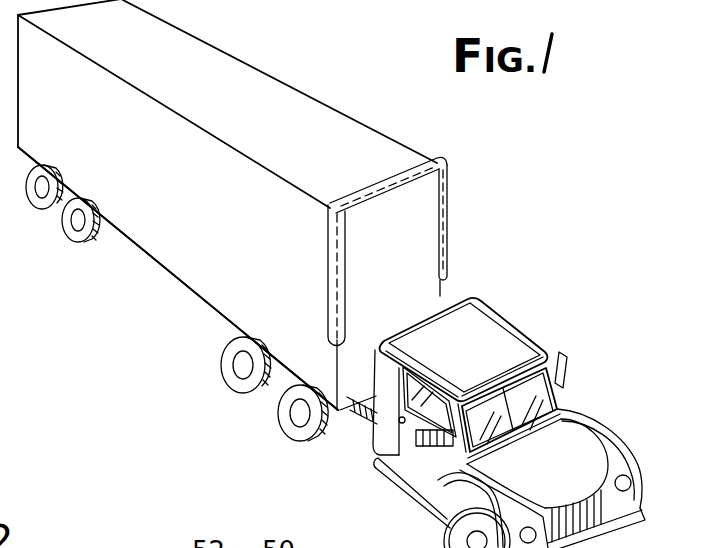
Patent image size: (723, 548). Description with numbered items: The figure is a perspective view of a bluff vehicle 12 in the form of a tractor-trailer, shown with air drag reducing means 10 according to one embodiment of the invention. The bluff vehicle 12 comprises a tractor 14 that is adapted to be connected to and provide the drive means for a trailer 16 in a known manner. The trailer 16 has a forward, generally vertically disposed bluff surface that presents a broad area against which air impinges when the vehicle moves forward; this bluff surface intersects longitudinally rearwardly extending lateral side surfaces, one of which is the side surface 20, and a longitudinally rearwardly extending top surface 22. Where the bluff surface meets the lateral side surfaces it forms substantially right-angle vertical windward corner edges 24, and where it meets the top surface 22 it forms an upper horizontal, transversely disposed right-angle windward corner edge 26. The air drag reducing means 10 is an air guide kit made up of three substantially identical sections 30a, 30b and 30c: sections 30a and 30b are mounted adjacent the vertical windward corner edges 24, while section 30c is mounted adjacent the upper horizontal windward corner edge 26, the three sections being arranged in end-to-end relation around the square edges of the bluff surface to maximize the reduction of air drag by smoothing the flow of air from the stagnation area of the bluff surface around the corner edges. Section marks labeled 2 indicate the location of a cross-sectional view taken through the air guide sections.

The section line 2- 2 is at (347, 185).
The air drag reducing means 10 is at (462, 253).
The bluff vehicle 12 is at (75, 278).
The tractor 14 is at (438, 465).
The trailer 16 is at (152, 258).
The lateral side surface 20 is at (180, 258).
The top surface 22 is at (298, 103).
The vertical windward corner edge 24 is at (440, 295).
The upper horizontal windward corner edge 26 is at (452, 193).
The air guide kit section 30a is at (328, 263).
The air guide kit section 30b is at (447, 227).
The air guide kit section 30c is at (410, 169).